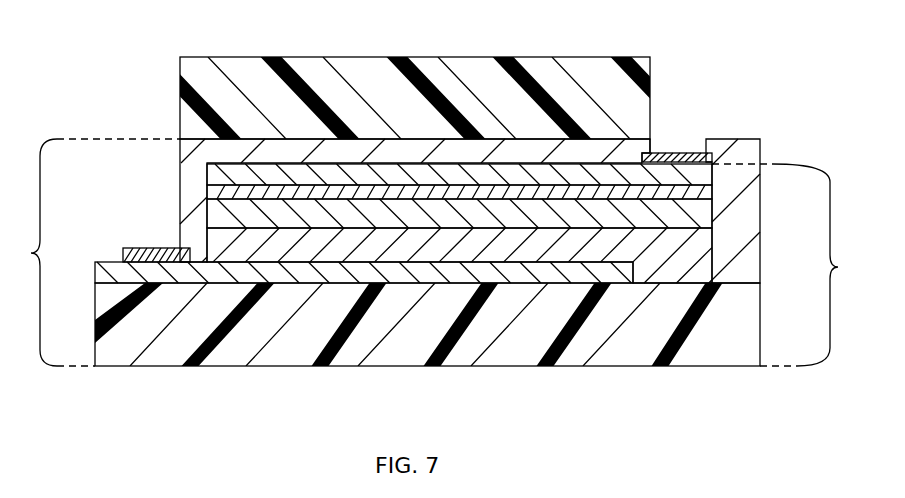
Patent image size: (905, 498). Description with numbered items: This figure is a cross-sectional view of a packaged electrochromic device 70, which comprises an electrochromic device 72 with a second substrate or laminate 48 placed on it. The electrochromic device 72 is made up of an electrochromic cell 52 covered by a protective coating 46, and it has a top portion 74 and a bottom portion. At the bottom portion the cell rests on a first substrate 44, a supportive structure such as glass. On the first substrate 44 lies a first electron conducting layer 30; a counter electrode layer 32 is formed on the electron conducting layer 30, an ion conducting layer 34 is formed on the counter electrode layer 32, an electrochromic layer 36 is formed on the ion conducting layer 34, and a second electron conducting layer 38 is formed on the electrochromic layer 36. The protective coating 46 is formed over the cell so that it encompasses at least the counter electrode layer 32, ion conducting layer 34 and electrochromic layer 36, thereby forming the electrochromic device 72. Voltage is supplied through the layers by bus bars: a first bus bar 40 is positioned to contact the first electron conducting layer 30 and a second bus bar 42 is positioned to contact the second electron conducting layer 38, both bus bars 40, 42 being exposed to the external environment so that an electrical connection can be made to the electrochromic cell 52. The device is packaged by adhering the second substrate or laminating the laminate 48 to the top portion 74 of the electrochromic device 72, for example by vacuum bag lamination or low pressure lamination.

The first electron conducting layer 30 is at (115, 267).
The counter electrode layer 32 is at (693, 255).
The ion conducting layer 34 is at (703, 217).
The electrochromic layer 36 is at (700, 193).
The second electron conducting layer 38 is at (697, 173).
The first bus bar 40 is at (153, 248).
The second bus bar 42 is at (677, 152).
The first substrate 44 is at (240, 343).
The protective coating 46 is at (187, 153).
The second substrate 48 is at (366, 57).
The electrochromic cell 52 is at (790, 265).
The packaged electrochromic device 70 is at (166, 84).
The electrochromic device 72 is at (94, 252).
The top portion 74 is at (654, 152).